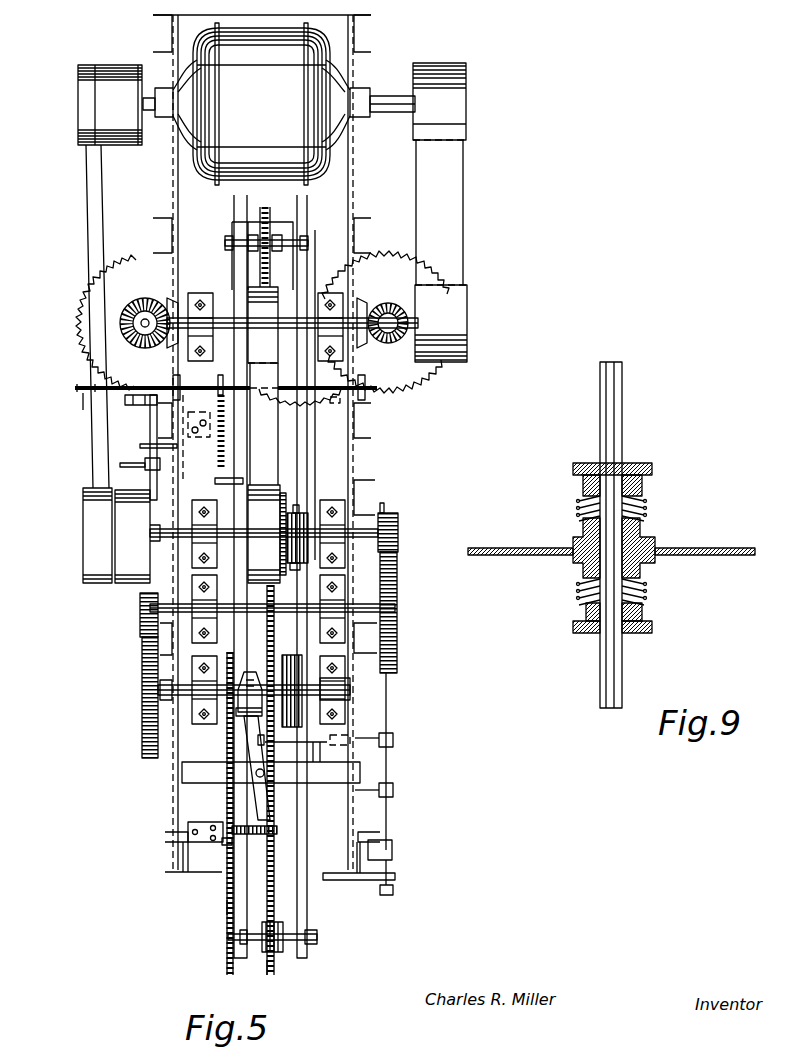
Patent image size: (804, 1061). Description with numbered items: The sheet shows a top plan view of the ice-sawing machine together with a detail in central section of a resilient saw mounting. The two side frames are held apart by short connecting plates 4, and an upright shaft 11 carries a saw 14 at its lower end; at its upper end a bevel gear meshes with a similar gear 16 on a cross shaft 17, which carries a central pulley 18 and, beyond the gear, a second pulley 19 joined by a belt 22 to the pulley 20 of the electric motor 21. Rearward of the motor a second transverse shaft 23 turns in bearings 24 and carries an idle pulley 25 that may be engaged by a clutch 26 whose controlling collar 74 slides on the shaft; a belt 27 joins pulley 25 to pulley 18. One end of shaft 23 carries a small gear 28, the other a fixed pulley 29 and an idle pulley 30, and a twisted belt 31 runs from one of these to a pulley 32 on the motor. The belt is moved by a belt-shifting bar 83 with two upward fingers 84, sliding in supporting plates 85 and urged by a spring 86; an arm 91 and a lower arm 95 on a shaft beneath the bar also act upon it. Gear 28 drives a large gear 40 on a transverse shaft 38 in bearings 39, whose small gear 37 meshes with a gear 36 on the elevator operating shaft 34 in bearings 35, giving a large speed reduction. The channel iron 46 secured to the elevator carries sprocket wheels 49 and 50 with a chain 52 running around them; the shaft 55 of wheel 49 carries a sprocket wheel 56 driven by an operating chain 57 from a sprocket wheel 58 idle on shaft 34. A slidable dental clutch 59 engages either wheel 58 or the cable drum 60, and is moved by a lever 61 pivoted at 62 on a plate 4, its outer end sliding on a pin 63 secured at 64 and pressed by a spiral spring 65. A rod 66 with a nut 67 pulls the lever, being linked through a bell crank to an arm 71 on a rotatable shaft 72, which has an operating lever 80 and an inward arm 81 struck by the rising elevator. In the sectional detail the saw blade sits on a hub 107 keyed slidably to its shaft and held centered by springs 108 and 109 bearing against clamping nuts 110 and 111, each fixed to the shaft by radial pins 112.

In FIG. 5, the connecting plate 4 is at (352, 785).
In FIG. 9, the upright shaft 11 is at (622, 432).
In FIG. 5, the saw 14 is at (405, 385).
In FIG. 5, the bevel gear 16 is at (362, 310).
In FIG. 5, the cross shaft 17 is at (318, 318).
In FIG. 5, the pulley 18 is at (248, 295).
In FIG. 5, the second pulley 19 is at (468, 345).
In FIG. 5, the pulley 20 is at (467, 90).
In FIG. 5, the electric motor 21 is at (378, 92).
In FIG. 5, the belt 22 is at (461, 190).
In FIG. 5, the second transverse shaft 23 is at (175, 540).
In FIG. 5, the bearing 24 is at (345, 503).
In FIG. 5, the pulley 25 is at (282, 490).
In FIG. 5, the clutch 26 is at (287, 497).
In FIG. 5, the belt 27 is at (270, 453).
In FIG. 5, the small gear 28 is at (398, 530).
In FIG. 5, the pulley 29 is at (133, 583).
In FIG. 5, the pulley 30 is at (95, 583).
In FIG. 5, the twisted belt 31 is at (95, 462).
In FIG. 5, the pulley 32 is at (78, 145).
In FIG. 5, the elevator operating shaft 34 is at (182, 700).
In FIG. 5, the bearing 35 is at (350, 688).
In FIG. 5, the gear 36 is at (142, 730).
In FIG. 5, the small gear 37 is at (140, 622).
In FIG. 5, the transverse shaft 38 is at (258, 780).
In FIG. 5, the bearing 39 is at (345, 615).
In FIG. 5, the large gear 40 is at (397, 630).
In FIG. 5, the channel iron 46 is at (243, 225).
In FIG. 5, the sprocket wheel 49 is at (275, 975).
In FIG. 5, the sprocket wheel 50 is at (290, 200).
In FIG. 5, the chain 52 is at (268, 272).
In FIG. 5, the shaft 55 is at (318, 937).
In FIG. 5, the sprocket wheel 56 is at (228, 937).
In FIG. 5, the operating sprocket chain 57 is at (228, 906).
In FIG. 5, the sprocket wheel 58 is at (228, 652).
In FIG. 5, the slidable dental clutch 59 is at (255, 670).
In FIG. 5, the cable drum 60 is at (288, 655).
In FIG. 5, the lever 61 is at (250, 745).
In FIG. 5, the pivot 62 is at (265, 773).
In FIG. 5, the pin 63 is at (280, 830).
In FIG. 5, the pin mounting 64 is at (210, 823).
In FIG. 5, the spiral spring 65 is at (222, 845).
In FIG. 5, the rod 66 is at (313, 762).
In FIG. 5, the nut 67 is at (250, 768).
In FIG. 5, the arm 71 is at (393, 740).
In FIG. 5, the rotatable shaft 72 is at (393, 785).
In FIG. 5, the clutch controlling collar 74 is at (302, 513).
In FIG. 5, the operating lever 80 is at (395, 890).
In FIG. 5, the inwardly extending arm 81 is at (393, 792).
In FIG. 5, the belt-shifting bar 83 is at (75, 388).
In FIG. 5, the finger 84 is at (85, 410).
In FIG. 5, the supporting plate 85 is at (362, 385).
In FIG. 5, the spring 86 is at (313, 398).
In FIG. 5, the arm 91 is at (140, 406).
In FIG. 5, the lower arm 95 is at (145, 460).
In FIG. 9, the hub 107 is at (645, 548).
In FIG. 9, the spring 108 is at (650, 498).
In FIG. 9, the spring 109 is at (648, 596).
In FIG. 9, the clamping nut 110 is at (652, 468).
In FIG. 9, the clamping nut 111 is at (655, 634).
In FIG. 9, the radial pin 112 is at (648, 622).